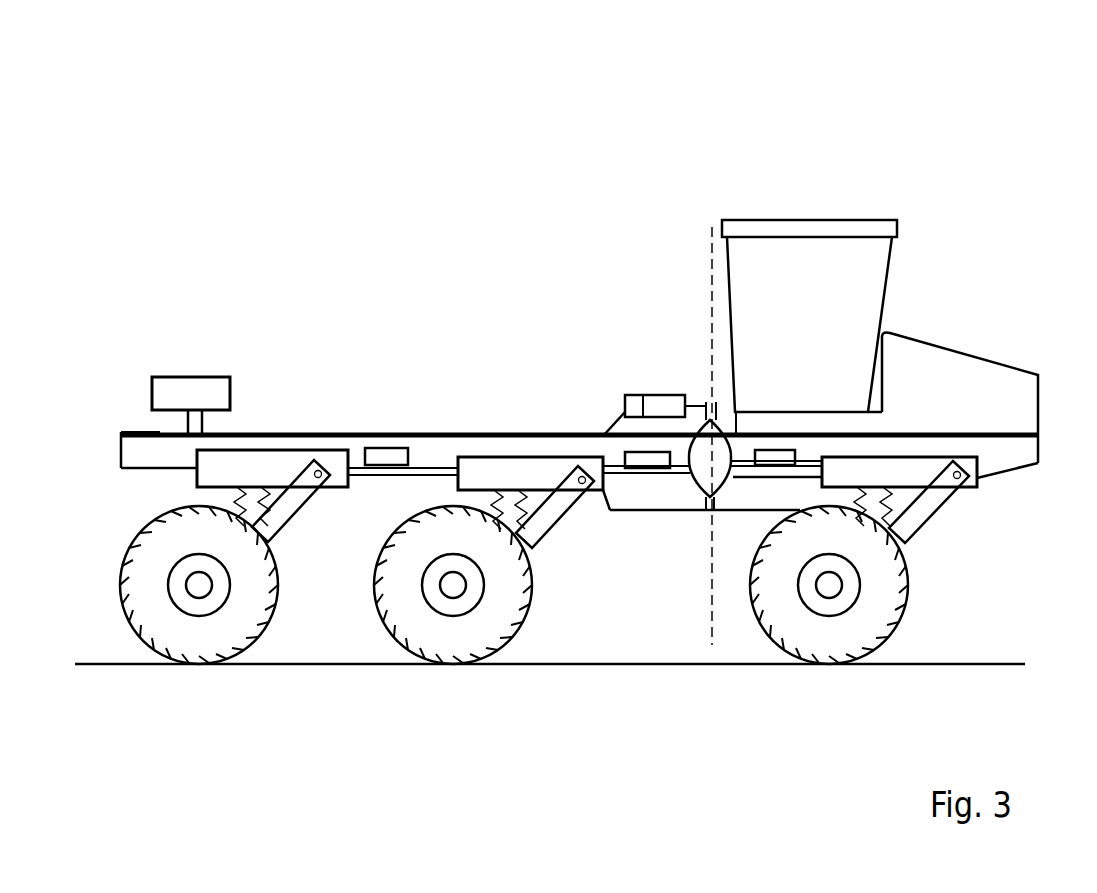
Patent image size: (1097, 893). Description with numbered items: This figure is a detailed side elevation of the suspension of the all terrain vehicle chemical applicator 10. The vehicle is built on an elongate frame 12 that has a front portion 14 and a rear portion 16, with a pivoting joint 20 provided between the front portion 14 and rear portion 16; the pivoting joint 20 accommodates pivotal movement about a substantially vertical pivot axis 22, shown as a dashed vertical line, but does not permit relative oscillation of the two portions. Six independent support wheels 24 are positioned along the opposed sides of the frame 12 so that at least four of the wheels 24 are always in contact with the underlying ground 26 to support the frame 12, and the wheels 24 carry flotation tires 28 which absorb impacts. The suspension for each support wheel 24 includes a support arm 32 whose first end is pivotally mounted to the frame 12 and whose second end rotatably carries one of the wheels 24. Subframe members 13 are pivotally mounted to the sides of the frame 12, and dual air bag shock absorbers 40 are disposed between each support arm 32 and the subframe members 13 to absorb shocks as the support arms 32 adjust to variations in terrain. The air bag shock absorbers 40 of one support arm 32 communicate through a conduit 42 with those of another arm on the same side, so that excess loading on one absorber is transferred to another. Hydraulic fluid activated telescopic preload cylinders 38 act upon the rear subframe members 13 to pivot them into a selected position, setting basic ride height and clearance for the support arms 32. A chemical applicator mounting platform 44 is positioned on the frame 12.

The all terrain vehicle chemical applicator 10 is at (300, 142).
The elongate frame 12 is at (437, 448).
The subframe members 13 is at (290, 455).
The front portion 14 is at (1010, 456).
The rear portion 16 is at (133, 428).
The pivoting joint 20 is at (708, 420).
The substantially vertical pivot axis 22 is at (708, 262).
The support wheels 24 is at (183, 664).
The underlying ground 26 is at (945, 668).
The flotation tires 28 is at (240, 640).
The support arm 32 is at (316, 498).
The hydraulic fluid activated telescopic preload cylinders 38 is at (383, 448).
The air bag shock absorbers 40 is at (232, 455).
The conduit 42 is at (388, 472).
The chemical applicator mounting platform 44 is at (180, 397).